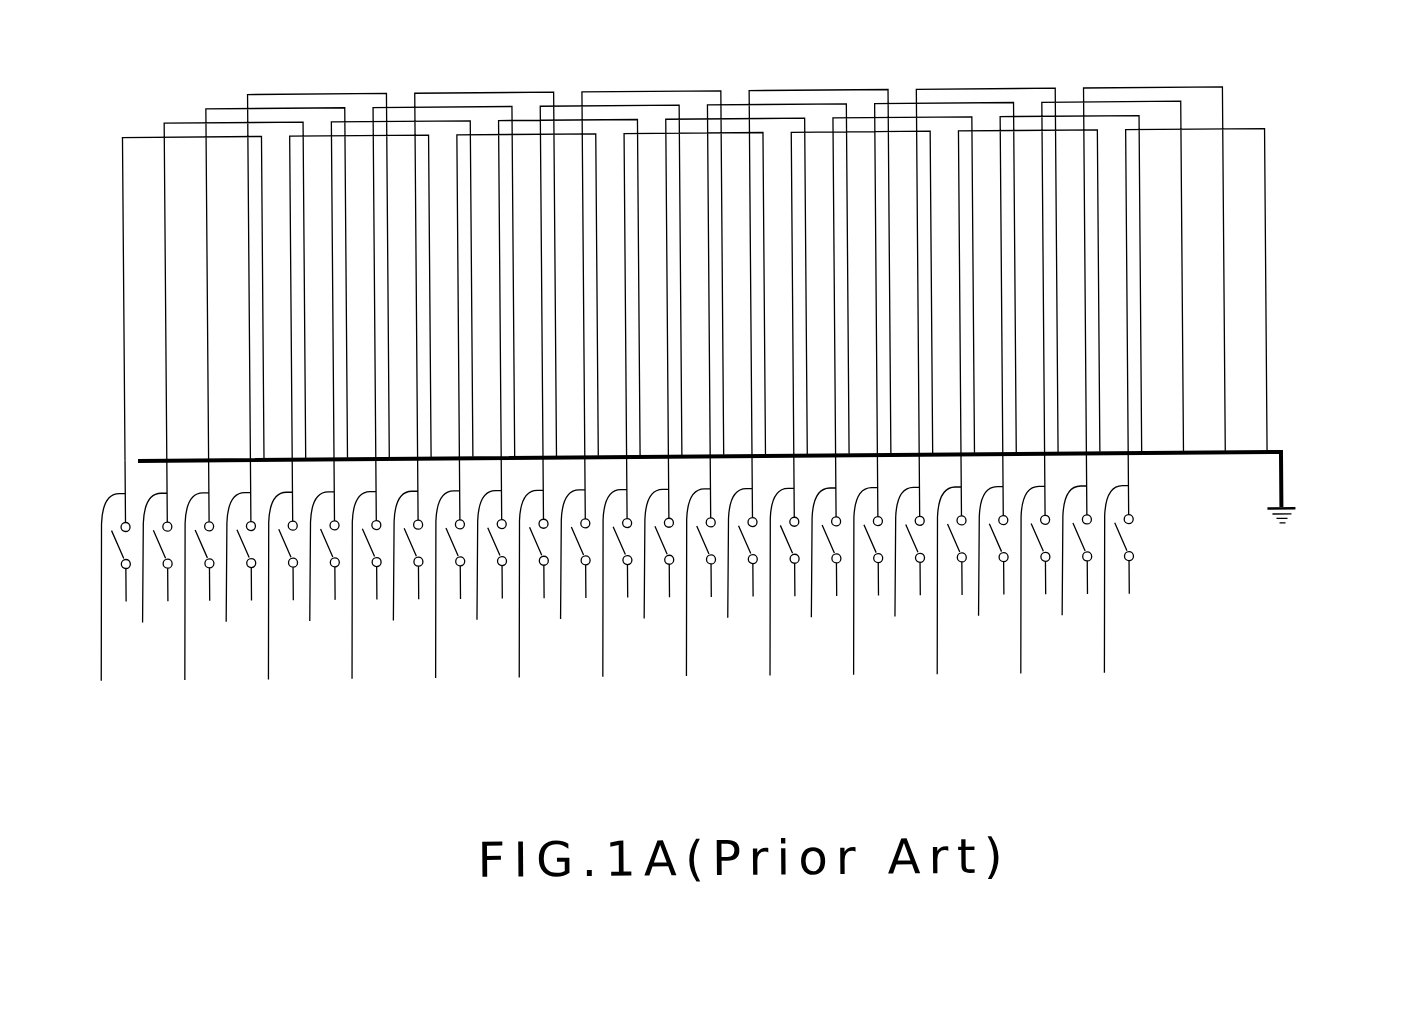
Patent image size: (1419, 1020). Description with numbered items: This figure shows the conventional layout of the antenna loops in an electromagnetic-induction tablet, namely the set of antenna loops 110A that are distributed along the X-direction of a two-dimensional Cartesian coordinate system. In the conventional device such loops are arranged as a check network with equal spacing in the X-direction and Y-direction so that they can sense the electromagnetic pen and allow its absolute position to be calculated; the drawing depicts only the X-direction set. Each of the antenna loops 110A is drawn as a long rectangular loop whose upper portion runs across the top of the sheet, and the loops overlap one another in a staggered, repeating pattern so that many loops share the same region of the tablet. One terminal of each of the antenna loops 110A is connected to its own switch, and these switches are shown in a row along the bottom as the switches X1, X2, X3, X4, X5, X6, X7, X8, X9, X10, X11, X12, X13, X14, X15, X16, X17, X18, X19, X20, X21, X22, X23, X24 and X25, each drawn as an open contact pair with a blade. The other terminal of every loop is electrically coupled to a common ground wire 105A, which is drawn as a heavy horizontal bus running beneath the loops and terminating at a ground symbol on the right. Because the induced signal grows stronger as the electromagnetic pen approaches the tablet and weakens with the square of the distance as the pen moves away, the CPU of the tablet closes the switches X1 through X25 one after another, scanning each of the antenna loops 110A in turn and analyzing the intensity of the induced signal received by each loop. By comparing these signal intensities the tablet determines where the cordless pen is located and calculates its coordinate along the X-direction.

The antenna loops 110A is at (330, 90).
The ground wire 105A is at (1284, 467).
The switch X1 is at (106, 589).
The switch X2 is at (147, 564).
The switch X3 is at (190, 589).
The switch X4 is at (230, 563).
The switch X5 is at (273, 588).
The switch X6 is at (314, 563).
The switch X7 is at (357, 588).
The switch X8 is at (398, 562).
The switch X9 is at (440, 587).
The switch X10 is at (481, 562).
The switch X11 is at (523, 594).
The switch X12 is at (564, 561).
The switch X13 is at (608, 594).
The switch X14 is at (648, 560).
The switch X15 is at (692, 593).
The switch X16 is at (731, 560).
The switch X17 is at (775, 592).
The switch X18 is at (815, 559).
The switch X19 is at (859, 592).
The switch X20 is at (899, 558).
The switch X21 is at (941, 591).
The switch X22 is at (981, 558).
The switch X23 is at (1027, 590).
The switch X24 is at (1066, 557).
The switch X25 is at (1110, 590).